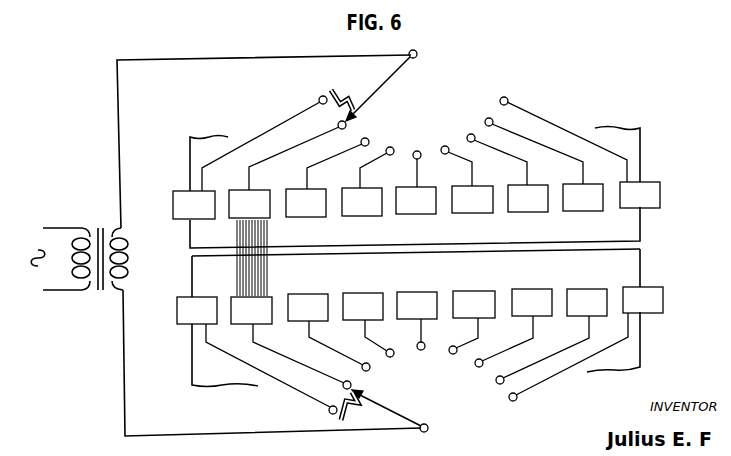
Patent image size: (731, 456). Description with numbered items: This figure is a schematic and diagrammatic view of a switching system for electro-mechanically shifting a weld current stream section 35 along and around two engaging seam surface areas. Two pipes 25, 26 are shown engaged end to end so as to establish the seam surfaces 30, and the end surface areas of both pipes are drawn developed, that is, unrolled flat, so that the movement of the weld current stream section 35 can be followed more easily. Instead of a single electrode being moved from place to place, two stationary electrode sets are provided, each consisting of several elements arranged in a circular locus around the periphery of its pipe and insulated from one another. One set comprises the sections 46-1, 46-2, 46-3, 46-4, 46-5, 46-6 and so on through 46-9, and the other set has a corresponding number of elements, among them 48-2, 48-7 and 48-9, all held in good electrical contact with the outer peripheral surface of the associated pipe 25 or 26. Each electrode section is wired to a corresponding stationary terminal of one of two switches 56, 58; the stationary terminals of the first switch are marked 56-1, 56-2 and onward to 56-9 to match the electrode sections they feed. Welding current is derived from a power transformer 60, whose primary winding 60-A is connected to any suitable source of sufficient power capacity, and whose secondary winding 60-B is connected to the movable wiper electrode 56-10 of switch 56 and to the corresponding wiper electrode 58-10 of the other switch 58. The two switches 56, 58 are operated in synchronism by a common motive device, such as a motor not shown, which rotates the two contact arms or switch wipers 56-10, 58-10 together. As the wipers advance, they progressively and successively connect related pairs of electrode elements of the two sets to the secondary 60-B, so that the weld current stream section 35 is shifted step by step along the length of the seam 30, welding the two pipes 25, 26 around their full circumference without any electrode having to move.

The power transformer 60 is at (103, 258).
The primary winding 60-A is at (78, 283).
The secondary winding 60-B is at (127, 270).
The pipe 26 is at (190, 170).
The pipe 25 is at (193, 361).
The seam surfaces 30 is at (554, 247).
The weld current stream section 35 is at (266, 260).
The electrode section 46-1 is at (200, 211).
The electrode section 46-2 is at (262, 208).
The electrode section 46-3 is at (318, 208).
The electrode section 46-4 is at (375, 207).
The electrode section 46-5 is at (426, 200).
The electrode section 46-6 is at (483, 200).
The electrode section 46-9 is at (642, 198).
The electrode element 48-2 is at (250, 308).
The electrode element 48-7 is at (530, 297).
The electrode element 48-9 is at (646, 291).
The switch 56 is at (371, 80).
The stationary switch terminal 56-1 is at (320, 97).
The stationary switch terminal 56-2 is at (337, 127).
The stationary switch terminal 56-9 is at (504, 97).
The movable wiper electrode 56-10 is at (365, 100).
The switch 58 is at (467, 418).
The wiper electrode 58-10 is at (376, 397).